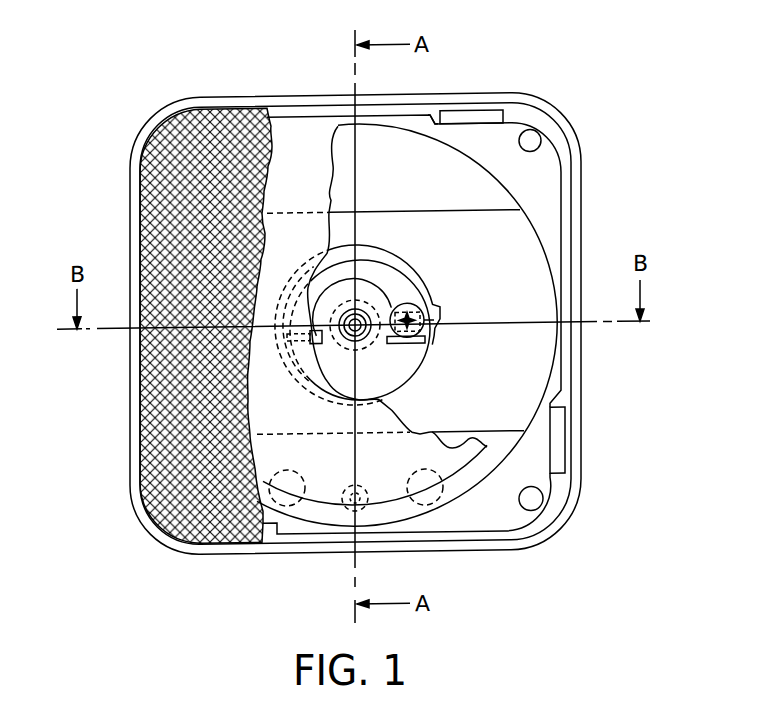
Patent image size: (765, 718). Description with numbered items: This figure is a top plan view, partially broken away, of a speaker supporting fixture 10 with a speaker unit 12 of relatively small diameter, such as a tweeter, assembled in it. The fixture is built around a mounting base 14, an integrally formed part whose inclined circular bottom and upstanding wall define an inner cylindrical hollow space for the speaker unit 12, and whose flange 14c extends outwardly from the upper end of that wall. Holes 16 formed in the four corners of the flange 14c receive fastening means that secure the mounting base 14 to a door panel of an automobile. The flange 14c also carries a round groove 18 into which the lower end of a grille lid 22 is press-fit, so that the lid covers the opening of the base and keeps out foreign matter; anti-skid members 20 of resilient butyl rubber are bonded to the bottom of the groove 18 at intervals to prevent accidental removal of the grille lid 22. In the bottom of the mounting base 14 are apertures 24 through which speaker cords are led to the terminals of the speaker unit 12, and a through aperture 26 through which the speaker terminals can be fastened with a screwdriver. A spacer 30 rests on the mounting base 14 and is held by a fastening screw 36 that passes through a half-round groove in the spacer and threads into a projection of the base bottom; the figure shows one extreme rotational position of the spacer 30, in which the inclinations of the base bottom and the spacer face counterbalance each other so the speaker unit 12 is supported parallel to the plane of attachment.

The speaker supporting fixture 10 is at (556, 105).
The speaker unit 12 is at (300, 159).
The mounting base 14 is at (507, 95).
The flange 14c is at (423, 101).
The holes 16 is at (533, 143).
The round groove 18 is at (563, 247).
The anti-skid members 20 is at (470, 118).
The grille lid 22 is at (139, 172).
The apertures 24 is at (287, 506).
The through aperture 26 is at (357, 512).
The spacer 30 is at (415, 361).
The fastening screw 36 is at (416, 302).